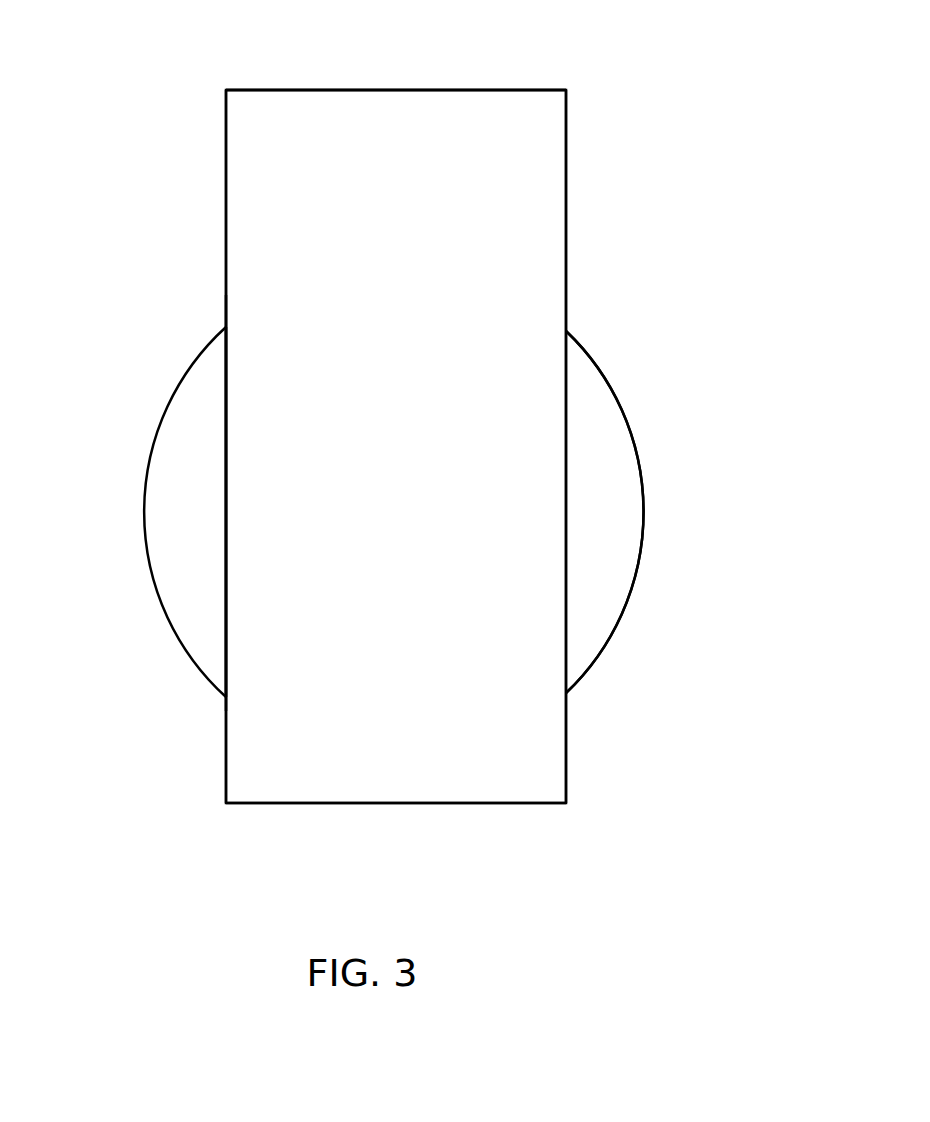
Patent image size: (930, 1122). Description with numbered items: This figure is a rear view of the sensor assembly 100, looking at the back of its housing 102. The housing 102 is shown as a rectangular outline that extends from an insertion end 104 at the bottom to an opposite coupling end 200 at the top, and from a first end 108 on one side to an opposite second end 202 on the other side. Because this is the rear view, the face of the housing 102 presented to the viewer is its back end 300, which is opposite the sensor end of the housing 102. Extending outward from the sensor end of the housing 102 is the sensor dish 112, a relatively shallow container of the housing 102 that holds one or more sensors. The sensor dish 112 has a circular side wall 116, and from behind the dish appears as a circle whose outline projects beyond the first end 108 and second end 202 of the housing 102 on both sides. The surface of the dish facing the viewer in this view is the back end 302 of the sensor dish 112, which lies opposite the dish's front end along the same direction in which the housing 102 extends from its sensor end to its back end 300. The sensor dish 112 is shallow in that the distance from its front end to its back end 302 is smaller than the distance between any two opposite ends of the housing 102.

The sensor assembly 100 is at (147, 867).
The housing 102 is at (567, 89).
The insertion end 104 is at (487, 812).
The first end 108 is at (217, 259).
The sensor dish 112 is at (108, 295).
The circular side wall 116 is at (207, 330).
The coupling end 200 is at (457, 83).
The second end 202 is at (574, 277).
The back end of housing 300 is at (519, 199).
The back end of sensor dish 302 is at (612, 482).